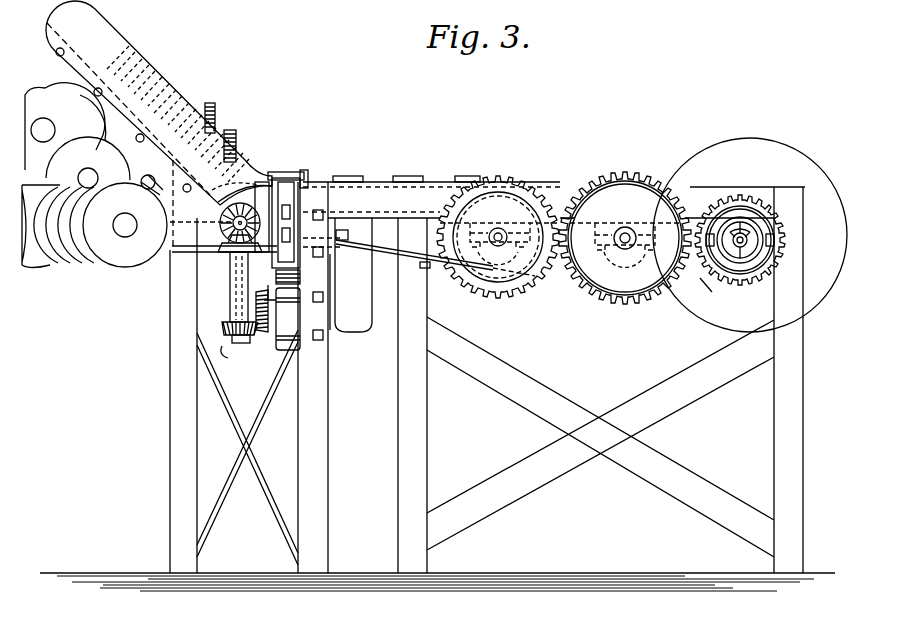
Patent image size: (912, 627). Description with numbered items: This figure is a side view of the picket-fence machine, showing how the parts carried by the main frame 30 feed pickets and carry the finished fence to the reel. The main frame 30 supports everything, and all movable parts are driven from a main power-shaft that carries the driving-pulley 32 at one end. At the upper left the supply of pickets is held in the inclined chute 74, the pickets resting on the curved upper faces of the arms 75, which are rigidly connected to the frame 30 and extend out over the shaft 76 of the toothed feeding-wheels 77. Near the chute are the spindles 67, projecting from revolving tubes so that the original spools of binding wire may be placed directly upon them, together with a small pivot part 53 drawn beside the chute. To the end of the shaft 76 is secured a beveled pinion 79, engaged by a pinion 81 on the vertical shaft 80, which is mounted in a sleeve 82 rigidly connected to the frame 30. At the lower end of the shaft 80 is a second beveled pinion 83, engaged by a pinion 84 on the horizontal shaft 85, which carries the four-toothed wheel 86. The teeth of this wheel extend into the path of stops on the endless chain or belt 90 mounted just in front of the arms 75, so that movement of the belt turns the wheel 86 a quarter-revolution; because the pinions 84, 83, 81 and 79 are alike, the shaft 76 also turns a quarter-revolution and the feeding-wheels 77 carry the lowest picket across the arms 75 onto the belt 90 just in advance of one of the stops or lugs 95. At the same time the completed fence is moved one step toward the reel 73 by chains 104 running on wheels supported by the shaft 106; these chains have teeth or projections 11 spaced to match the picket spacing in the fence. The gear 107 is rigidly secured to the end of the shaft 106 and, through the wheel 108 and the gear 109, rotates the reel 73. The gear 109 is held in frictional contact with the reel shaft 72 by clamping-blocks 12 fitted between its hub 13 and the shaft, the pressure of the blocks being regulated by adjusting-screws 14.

The teeth or projections 11 is at (377, 275).
The clamping-blocks 12 is at (768, 228).
The hub 13 is at (742, 216).
The adjusting-screws 14 is at (711, 252).
The main frame 30 is at (437, 375).
The driving-pulley 32 is at (351, 275).
The pivot 53 is at (152, 176).
The spindles 67 is at (46, 125).
The shaft of the reel 72 is at (740, 240).
The reel 73 is at (750, 235).
The inclined chute 74 is at (159, 103).
The arms 75 is at (245, 183).
The shaft of the feeding-wheels 76 is at (237, 213).
The feeding-wheels 77 is at (278, 176).
The beveled pinion 79 is at (201, 215).
The vertical shaft 80 is at (232, 324).
The pinion 81 is at (230, 258).
The sleeve 82 is at (232, 292).
The second beveled pinion 83 is at (235, 349).
The pinion 84 is at (262, 332).
The horizontal shaft 85 is at (266, 292).
The four-toothed wheel 86 is at (288, 319).
The endless chain or belt 90 is at (276, 274).
The stops or lugs 95 is at (300, 178).
The chains 104 is at (398, 262).
The shaft 106 is at (500, 234).
The gear 107 is at (500, 244).
The wheel 108 is at (625, 238).
The gear 109 is at (715, 288).